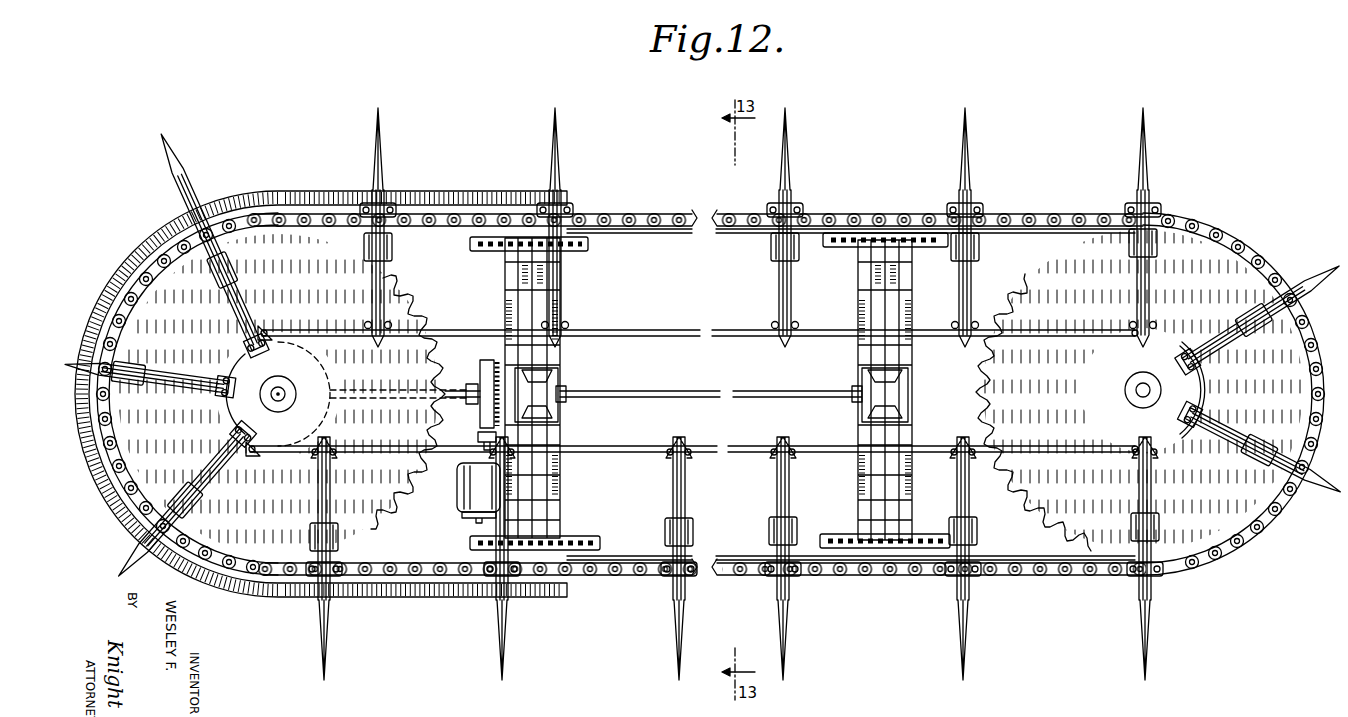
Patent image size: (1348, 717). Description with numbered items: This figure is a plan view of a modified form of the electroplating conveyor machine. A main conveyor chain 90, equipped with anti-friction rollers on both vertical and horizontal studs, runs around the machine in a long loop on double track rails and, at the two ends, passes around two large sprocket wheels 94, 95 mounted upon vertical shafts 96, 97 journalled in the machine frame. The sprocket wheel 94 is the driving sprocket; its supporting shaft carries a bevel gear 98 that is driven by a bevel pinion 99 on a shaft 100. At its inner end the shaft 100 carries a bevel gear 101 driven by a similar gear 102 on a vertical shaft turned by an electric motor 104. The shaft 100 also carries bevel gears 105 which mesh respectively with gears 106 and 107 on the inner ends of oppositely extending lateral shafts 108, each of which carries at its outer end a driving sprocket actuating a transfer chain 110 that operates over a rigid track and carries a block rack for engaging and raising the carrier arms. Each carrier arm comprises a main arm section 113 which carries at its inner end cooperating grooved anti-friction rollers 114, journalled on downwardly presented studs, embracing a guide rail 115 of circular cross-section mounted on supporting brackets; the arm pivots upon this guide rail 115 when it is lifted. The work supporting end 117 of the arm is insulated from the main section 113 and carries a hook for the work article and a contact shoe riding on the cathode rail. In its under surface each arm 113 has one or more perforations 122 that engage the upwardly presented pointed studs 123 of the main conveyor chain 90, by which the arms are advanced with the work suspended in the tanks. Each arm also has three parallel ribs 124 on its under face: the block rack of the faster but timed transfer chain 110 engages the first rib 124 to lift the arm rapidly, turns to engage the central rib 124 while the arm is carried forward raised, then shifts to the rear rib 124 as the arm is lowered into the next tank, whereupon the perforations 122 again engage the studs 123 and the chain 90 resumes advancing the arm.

The main conveyor chain 90 is at (704, 213).
The sprocket wheel 94 is at (278, 395).
The sprocket wheel 95 is at (1139, 395).
The vertical shaft 96 is at (278, 386).
The vertical shaft 97 is at (1132, 394).
The bevel gear 98 is at (328, 423).
The bevel pinion 99 is at (335, 384).
The shaft 100 is at (408, 402).
The bevel gear 101 is at (462, 386).
The bevel gear 102 is at (498, 364).
The electric motor 104 is at (462, 482).
The bevel gears 105 is at (562, 389).
The gear 106 is at (560, 372).
The gear 107 is at (560, 410).
The lateral shafts 108 is at (520, 313).
The transfer chain 110 is at (592, 244).
The main arm section 113 is at (246, 290).
The grooved anti-friction rollers 114 is at (570, 326).
The guide rail 115 is at (706, 324).
The work supporting end 117 is at (561, 162).
The perforations 122 is at (316, 574).
The studs 123 is at (906, 200).
The parallel ribs 124 is at (1206, 495).